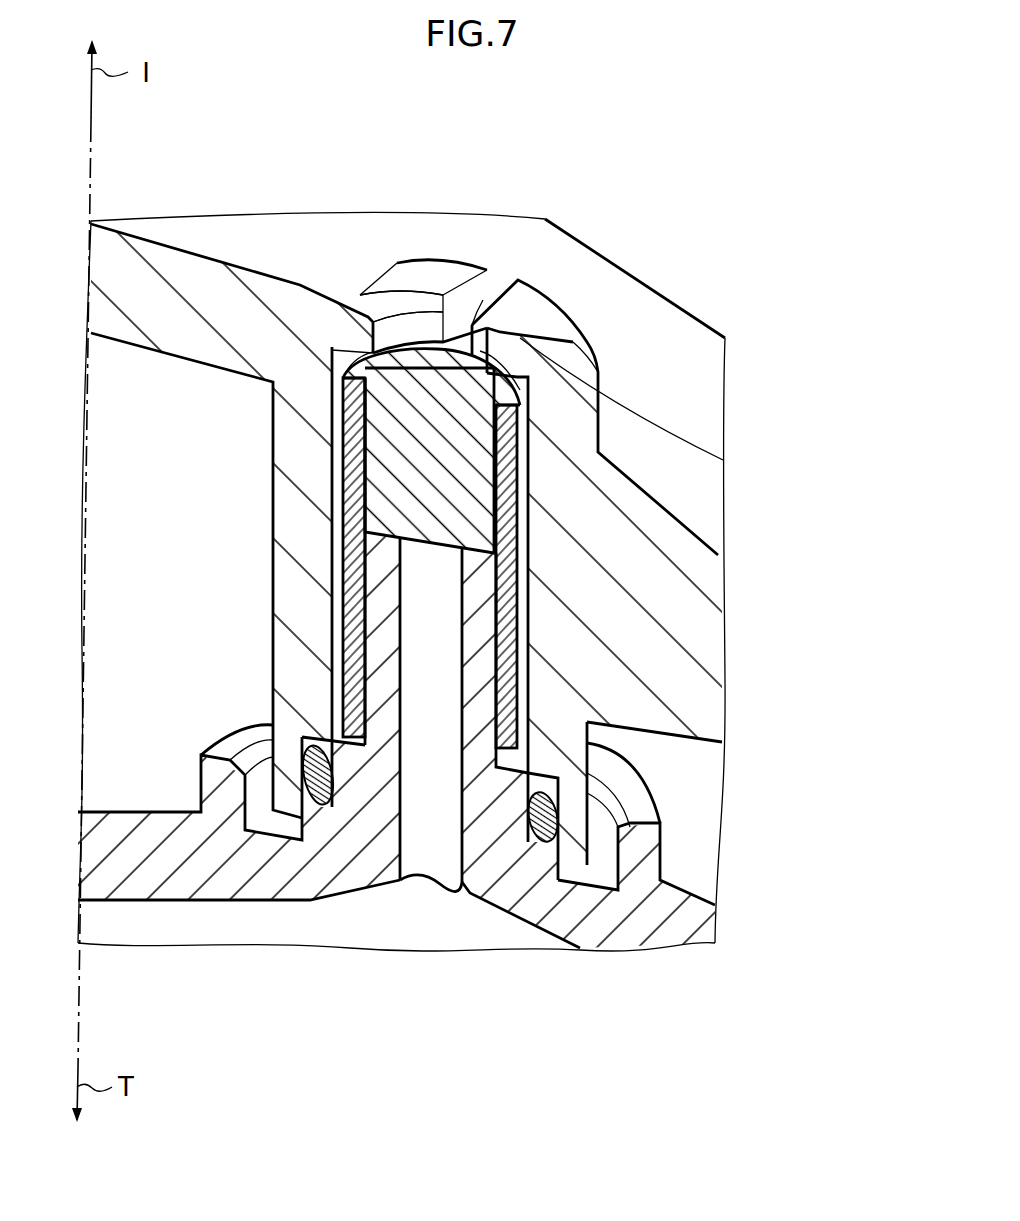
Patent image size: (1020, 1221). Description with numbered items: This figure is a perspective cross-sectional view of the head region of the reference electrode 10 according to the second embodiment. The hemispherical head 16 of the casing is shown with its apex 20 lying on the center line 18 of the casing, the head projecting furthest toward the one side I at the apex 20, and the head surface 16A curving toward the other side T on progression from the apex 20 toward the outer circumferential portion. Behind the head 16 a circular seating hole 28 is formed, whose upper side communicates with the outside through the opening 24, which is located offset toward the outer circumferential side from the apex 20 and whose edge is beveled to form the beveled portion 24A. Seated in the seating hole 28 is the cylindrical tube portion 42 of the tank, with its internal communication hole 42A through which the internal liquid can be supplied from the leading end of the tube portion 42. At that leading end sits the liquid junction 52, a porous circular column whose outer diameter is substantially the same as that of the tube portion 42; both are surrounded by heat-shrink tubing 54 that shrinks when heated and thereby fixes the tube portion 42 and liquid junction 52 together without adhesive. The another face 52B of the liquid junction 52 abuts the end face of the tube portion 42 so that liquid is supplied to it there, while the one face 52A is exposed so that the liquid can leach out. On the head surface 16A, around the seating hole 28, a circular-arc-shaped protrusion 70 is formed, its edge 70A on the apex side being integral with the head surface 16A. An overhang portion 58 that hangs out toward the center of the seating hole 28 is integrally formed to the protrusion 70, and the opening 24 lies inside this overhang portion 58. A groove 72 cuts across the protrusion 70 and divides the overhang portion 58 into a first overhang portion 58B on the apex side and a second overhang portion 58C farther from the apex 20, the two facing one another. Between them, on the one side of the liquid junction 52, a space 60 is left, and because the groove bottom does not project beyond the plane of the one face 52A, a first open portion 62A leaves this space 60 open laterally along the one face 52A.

The reference electrode 10 is at (726, 120).
The head 16 is at (730, 336).
The head surface 16A is at (705, 422).
The center line 18 is at (91, 119).
The apex 20 is at (99, 200).
The opening 24 is at (392, 262).
The beveled portion 24A is at (360, 295).
The seating hole 28 is at (343, 703).
The tube portion 42 is at (378, 603).
The communication hole 42A is at (423, 662).
The liquid junction 52 is at (715, 543).
The one face 52A is at (723, 460).
The another face 52B is at (420, 547).
The heat-shrink tubing 54 is at (503, 630).
The overhang portion 58 is at (150, 375).
The first overhang portion 58B is at (350, 332).
The second overhang portion 58C is at (503, 355).
The space 60 is at (418, 318).
The first open portion 62A is at (491, 290).
The protrusion 70 is at (606, 312).
The edge 70A is at (400, 304).
The groove 72 is at (519, 272).